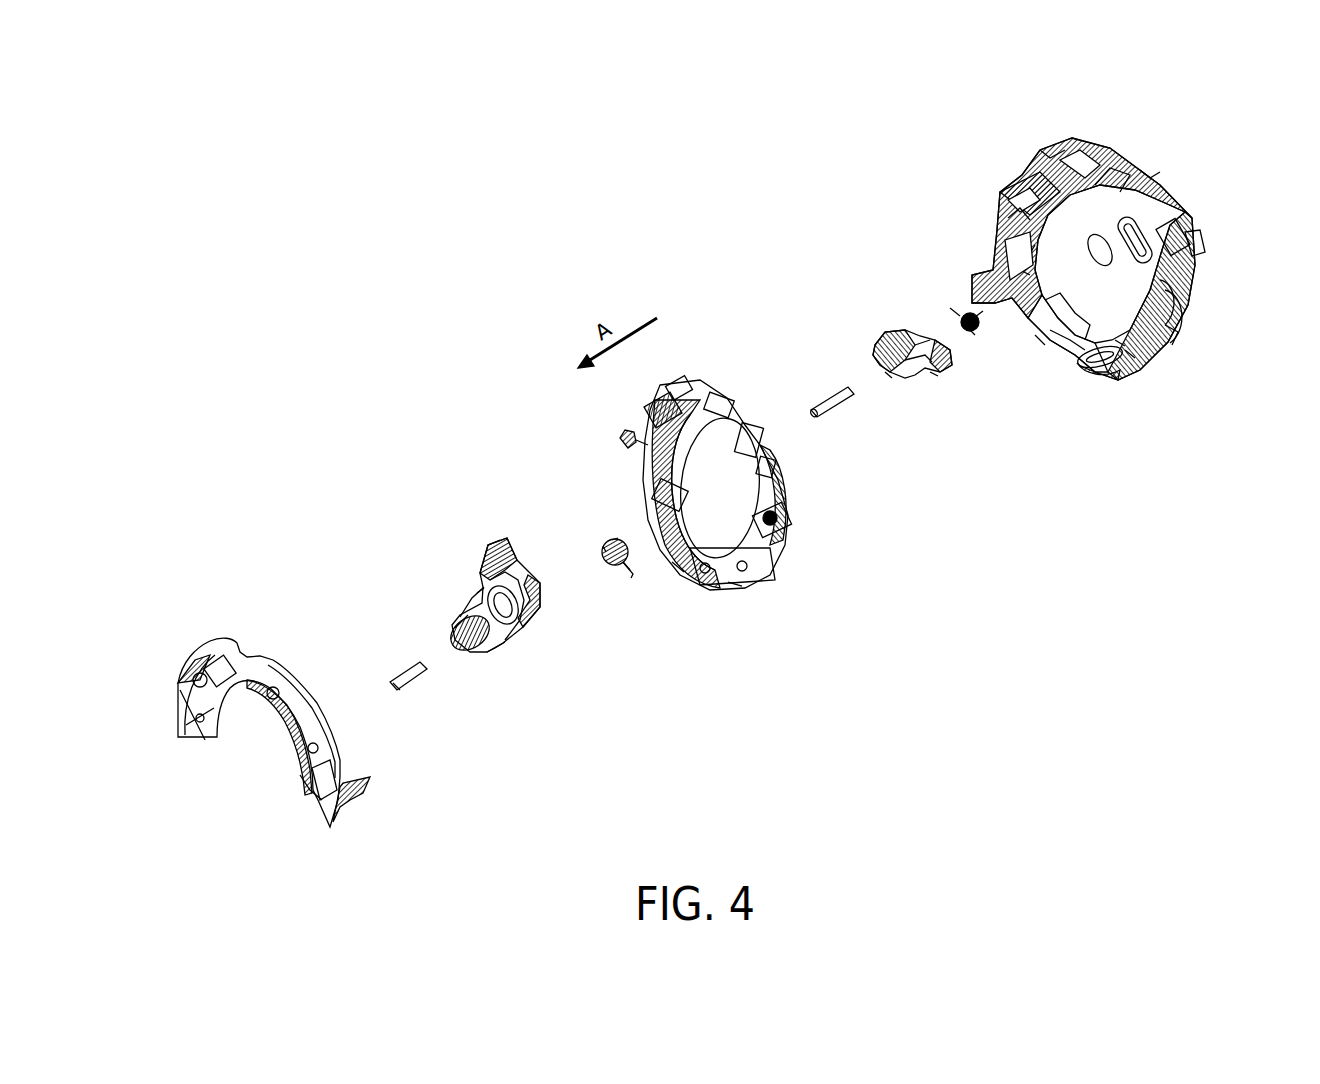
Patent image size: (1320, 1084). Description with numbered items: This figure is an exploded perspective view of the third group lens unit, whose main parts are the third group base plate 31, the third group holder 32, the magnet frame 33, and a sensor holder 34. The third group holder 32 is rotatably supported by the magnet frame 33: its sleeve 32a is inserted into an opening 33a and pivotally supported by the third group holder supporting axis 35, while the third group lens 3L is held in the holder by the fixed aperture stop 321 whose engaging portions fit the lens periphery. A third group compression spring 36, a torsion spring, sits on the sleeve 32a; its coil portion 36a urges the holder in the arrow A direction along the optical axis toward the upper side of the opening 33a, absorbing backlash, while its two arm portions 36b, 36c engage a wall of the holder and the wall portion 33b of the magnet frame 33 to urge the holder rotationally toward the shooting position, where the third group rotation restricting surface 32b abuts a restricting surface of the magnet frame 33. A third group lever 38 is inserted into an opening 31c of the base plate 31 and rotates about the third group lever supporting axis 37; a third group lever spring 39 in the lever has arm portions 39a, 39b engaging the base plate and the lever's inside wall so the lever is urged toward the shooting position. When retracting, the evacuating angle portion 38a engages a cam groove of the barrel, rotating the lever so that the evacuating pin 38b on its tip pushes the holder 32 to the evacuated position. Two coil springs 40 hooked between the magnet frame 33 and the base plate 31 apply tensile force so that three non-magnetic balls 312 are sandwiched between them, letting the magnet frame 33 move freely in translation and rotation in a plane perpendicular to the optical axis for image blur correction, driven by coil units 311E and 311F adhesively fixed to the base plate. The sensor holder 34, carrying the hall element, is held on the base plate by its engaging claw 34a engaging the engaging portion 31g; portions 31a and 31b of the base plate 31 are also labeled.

The third group base plate 31 is at (1063, 345).
The coil unit 311E is at (1043, 153).
The coil unit 311F is at (1147, 172).
The non-magnetic balls 312 is at (1013, 222).
The housing wall 31a is at (1130, 350).
The housing wall 31b is at (1120, 343).
The opening 31c is at (1040, 340).
The engaging portion 31g is at (1195, 240).
The third group holder 32 is at (530, 622).
The fixed aperture stop 321 is at (495, 643).
The sleeve 32a is at (468, 615).
The third group rotation restricting surface 32b is at (490, 537).
The third group lens 3L is at (477, 593).
The magnet frame 33 is at (757, 562).
The opening 33a is at (735, 583).
The wall portion 33b is at (677, 567).
The sensor holder 34 is at (204, 648).
The engaging claw 34a is at (372, 795).
The third group holder supporting axis 35 is at (397, 667).
The third group compression spring 36 is at (608, 573).
The coil portion 36a is at (617, 530).
The arm portion 36b is at (600, 537).
The arm portion 36c is at (632, 568).
The third group lever supporting axis 37 is at (827, 390).
The third group lever 38 is at (880, 347).
The evacuating angle portion 38a is at (888, 378).
The evacuating pin 38b is at (938, 378).
The third group lever spring 39 is at (967, 317).
The arm portion 39a is at (965, 320).
The arm portion 39b is at (975, 335).
The coil spring 40 is at (1170, 330).